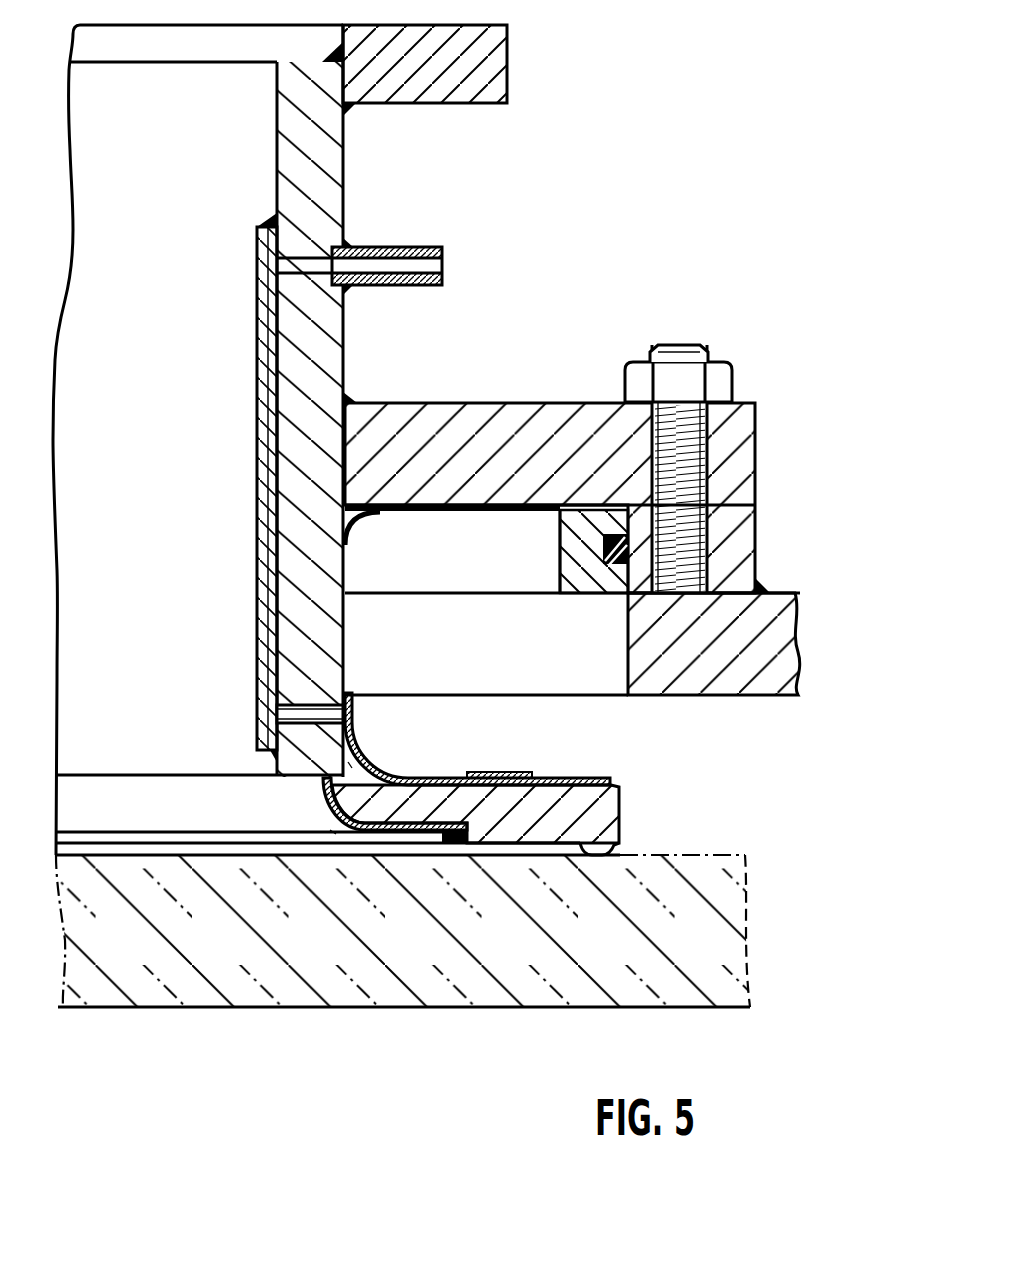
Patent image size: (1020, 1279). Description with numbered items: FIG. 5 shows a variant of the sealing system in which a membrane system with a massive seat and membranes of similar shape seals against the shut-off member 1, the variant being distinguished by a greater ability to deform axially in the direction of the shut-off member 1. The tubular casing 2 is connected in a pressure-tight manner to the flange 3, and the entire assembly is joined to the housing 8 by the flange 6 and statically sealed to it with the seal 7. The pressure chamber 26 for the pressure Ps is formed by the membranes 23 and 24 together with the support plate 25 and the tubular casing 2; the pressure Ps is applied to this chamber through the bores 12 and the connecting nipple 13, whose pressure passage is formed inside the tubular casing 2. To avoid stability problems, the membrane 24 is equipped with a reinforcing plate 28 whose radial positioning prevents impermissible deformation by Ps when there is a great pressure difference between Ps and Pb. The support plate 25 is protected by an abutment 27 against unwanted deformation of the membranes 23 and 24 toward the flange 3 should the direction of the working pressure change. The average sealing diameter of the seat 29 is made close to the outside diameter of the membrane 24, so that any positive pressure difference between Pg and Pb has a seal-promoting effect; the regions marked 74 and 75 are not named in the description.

The shut-off member 1 is at (728, 988).
The tubular casing 2 is at (333, 172).
The flange 3 is at (497, 75).
The flange 6 is at (745, 432).
The seal 7 is at (603, 547).
The housing 8 is at (782, 663).
The bores 12 is at (277, 718).
The connecting nipple 13 is at (443, 268).
The membrane 23 is at (442, 832).
The membrane 24 is at (590, 780).
The support plate 25 is at (595, 810).
The pressure chamber 26 is at (360, 748).
The abutment 27 is at (337, 775).
The reinforcing plate 28 is at (515, 772).
The seat 29 is at (600, 850).
The gap 74 is at (333, 832).
The gap 75 is at (350, 765).